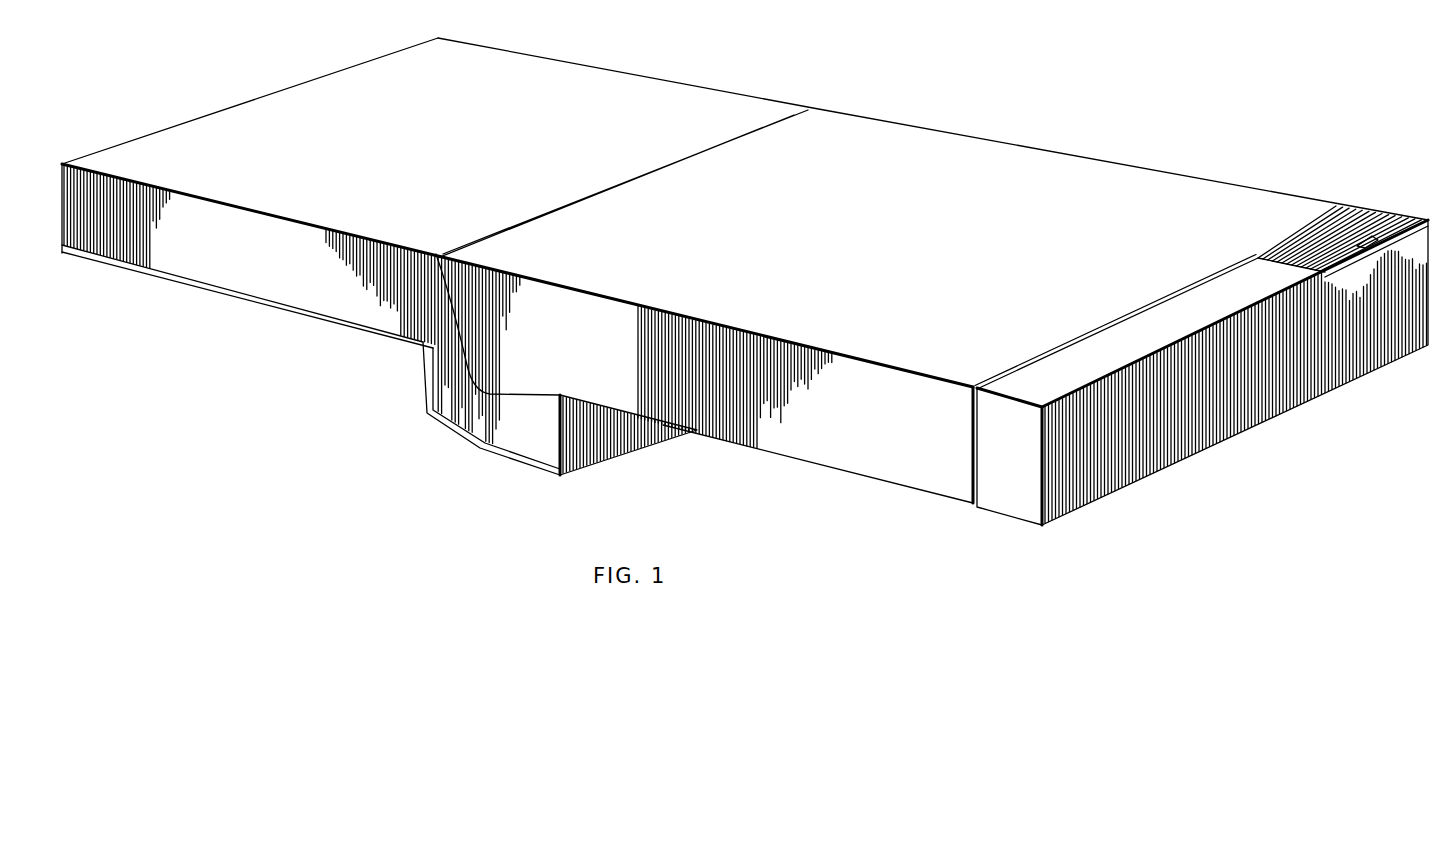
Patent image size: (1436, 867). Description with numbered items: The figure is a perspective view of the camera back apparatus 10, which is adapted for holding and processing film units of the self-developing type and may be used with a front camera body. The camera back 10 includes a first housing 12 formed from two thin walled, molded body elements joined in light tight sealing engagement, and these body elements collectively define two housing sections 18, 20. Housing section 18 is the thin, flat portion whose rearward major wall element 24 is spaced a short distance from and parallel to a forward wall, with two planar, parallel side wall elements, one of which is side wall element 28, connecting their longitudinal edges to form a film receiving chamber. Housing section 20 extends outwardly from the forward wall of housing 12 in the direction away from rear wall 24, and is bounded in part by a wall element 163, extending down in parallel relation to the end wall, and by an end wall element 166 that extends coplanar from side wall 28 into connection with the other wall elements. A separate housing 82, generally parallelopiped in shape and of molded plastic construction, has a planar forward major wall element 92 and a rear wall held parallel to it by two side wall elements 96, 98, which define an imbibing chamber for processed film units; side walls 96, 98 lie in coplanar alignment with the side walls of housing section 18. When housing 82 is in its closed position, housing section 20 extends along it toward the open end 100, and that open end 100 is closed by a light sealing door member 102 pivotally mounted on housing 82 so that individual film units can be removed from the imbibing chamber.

The camera back apparatus 10 is at (868, 89).
The first housing 12 is at (593, 61).
The rearward major wall element 24 is at (316, 98).
The side wall element 28 is at (207, 270).
The housing section 18 is at (262, 306).
The side wall element 96 is at (973, 137).
The housing section 20 is at (452, 438).
The end wall element 166 is at (510, 437).
The open end 100 is at (461, 326).
The wall element 163 is at (597, 437).
The side wall element 98 is at (902, 455).
The housing 82 is at (1096, 146).
The forward major wall element 92 is at (1220, 192).
The door member 102 is at (1280, 372).